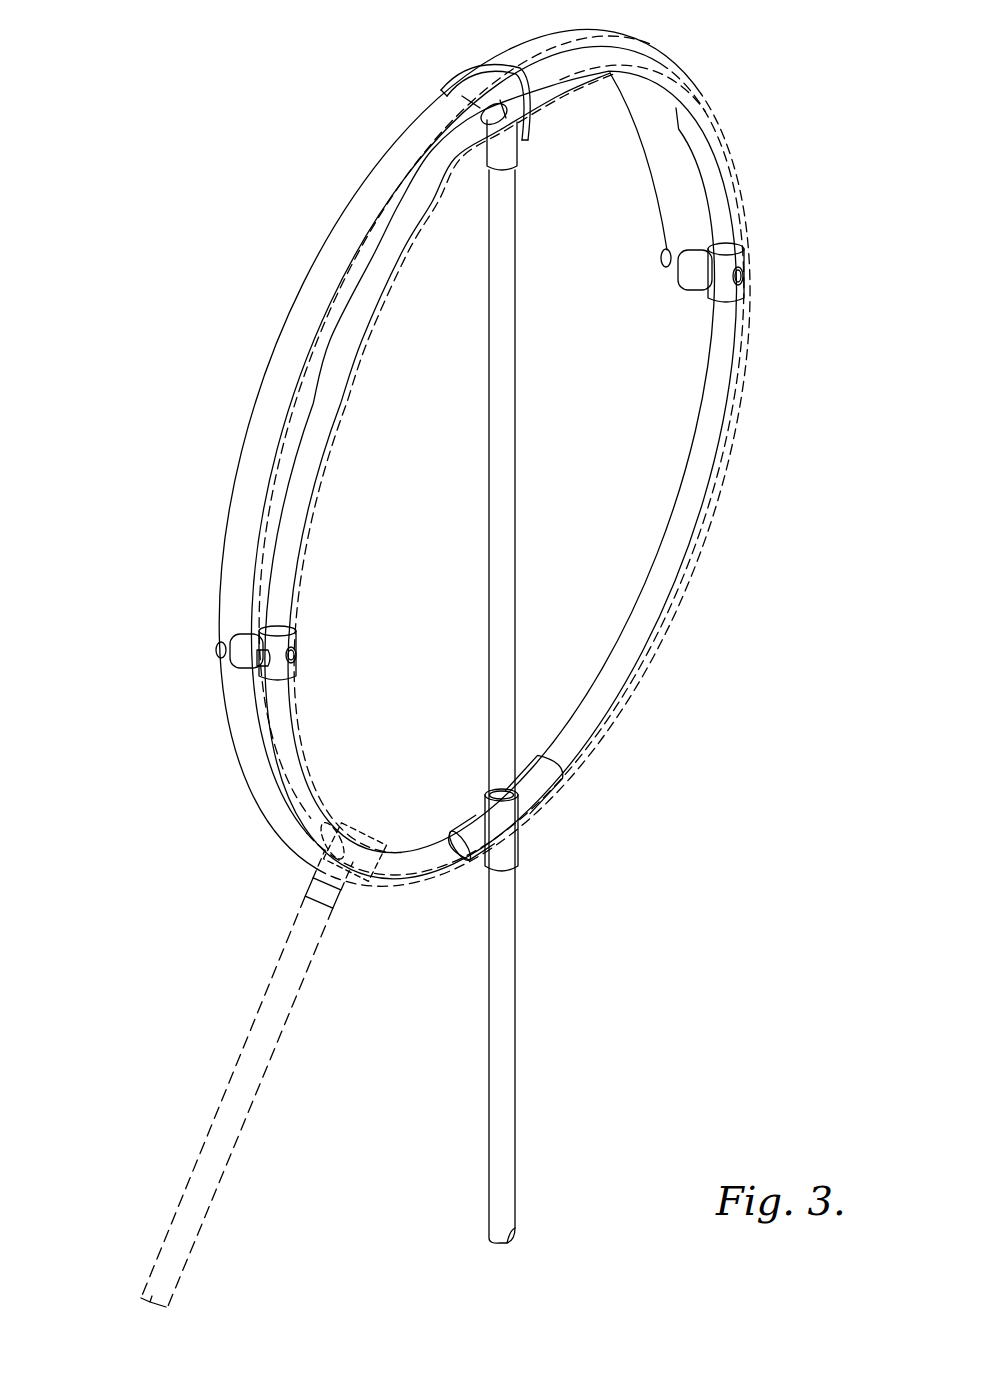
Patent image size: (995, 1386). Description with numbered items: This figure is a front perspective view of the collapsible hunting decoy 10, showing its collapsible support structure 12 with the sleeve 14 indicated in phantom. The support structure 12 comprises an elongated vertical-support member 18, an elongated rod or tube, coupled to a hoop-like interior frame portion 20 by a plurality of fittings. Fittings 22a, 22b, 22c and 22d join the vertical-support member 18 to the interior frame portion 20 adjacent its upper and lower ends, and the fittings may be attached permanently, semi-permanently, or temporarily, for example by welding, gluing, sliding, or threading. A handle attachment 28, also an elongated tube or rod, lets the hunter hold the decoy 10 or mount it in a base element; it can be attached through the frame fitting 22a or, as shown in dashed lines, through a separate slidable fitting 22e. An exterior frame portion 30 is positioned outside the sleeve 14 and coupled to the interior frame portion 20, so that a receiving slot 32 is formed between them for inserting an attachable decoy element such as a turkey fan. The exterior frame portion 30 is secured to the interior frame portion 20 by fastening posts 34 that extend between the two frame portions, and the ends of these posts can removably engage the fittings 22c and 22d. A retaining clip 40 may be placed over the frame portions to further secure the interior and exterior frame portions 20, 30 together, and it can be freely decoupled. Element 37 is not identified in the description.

The collapsible hunting decoy 10 is at (180, 160).
The collapsible support structure 12 is at (117, 509).
The sleeve 14 is at (280, 790).
The vertical-support member 18 is at (414, 738).
The interior frame portion 20 is at (469, 457).
The frame fitting 22a is at (497, 835).
The fitting 22b is at (505, 158).
The fitting 22c is at (278, 675).
The fitting 22d is at (730, 270).
The slidable fitting 22e is at (343, 840).
The handle attachment 28 is at (500, 1077).
The exterior frame portion 30 is at (410, 140).
The receiving slot 32 is at (302, 380).
The fastening posts 34 is at (690, 265).
The pin 37 is at (263, 653).
The retaining clip 40 is at (478, 78).